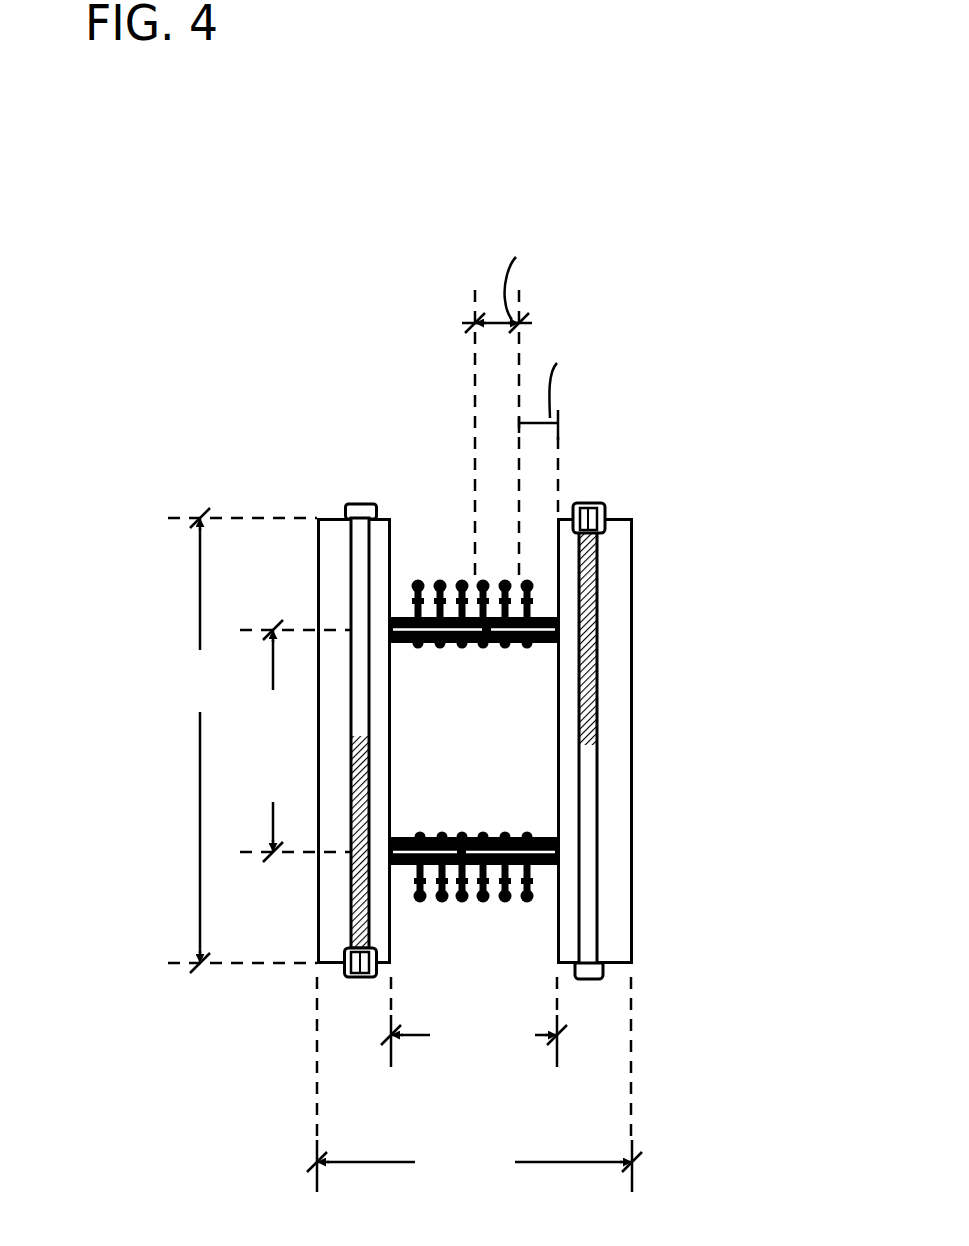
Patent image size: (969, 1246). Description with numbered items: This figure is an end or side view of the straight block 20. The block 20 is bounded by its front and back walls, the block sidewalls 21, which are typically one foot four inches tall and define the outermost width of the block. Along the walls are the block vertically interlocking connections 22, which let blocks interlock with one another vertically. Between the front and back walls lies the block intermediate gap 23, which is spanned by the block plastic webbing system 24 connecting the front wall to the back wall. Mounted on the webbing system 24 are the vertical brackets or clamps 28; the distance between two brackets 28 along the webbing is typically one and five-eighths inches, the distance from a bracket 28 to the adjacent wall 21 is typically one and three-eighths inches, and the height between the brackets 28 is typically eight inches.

The block 20 is at (330, 283).
The block sidewalls 21 is at (633, 606).
The block vertically interlocking connections 22 is at (350, 503).
The block intermediate gap 23 is at (452, 532).
The block plastic webbing system 24 is at (423, 647).
The block plastic webbing system vertical clamps 28 is at (510, 905).